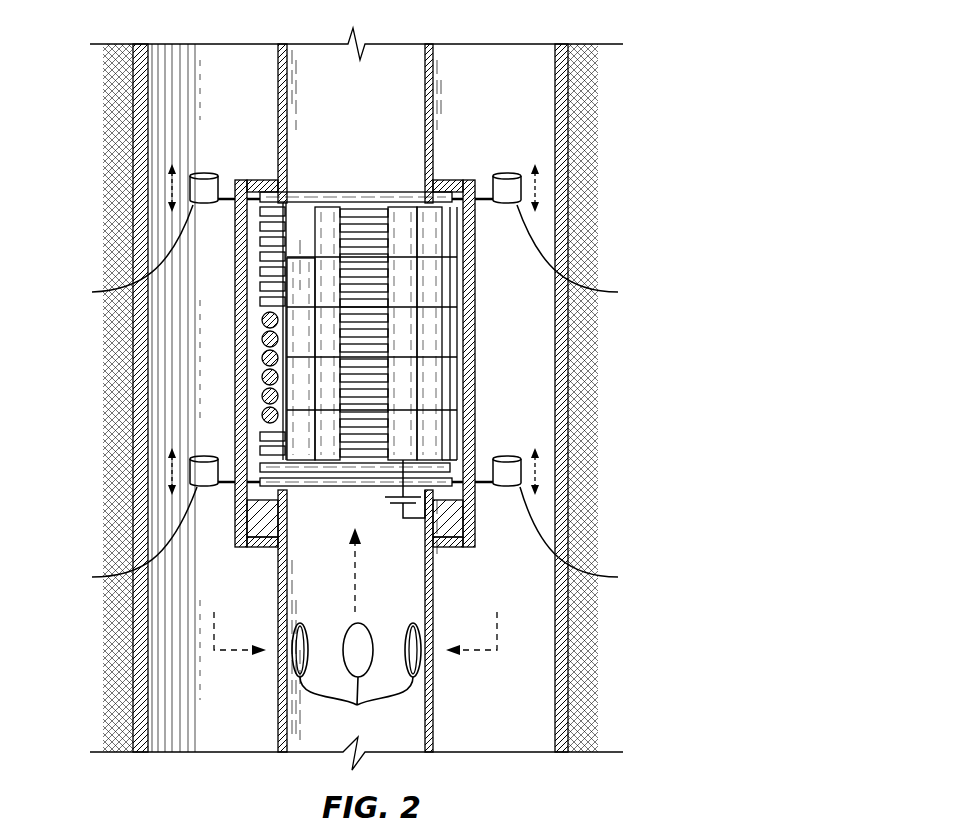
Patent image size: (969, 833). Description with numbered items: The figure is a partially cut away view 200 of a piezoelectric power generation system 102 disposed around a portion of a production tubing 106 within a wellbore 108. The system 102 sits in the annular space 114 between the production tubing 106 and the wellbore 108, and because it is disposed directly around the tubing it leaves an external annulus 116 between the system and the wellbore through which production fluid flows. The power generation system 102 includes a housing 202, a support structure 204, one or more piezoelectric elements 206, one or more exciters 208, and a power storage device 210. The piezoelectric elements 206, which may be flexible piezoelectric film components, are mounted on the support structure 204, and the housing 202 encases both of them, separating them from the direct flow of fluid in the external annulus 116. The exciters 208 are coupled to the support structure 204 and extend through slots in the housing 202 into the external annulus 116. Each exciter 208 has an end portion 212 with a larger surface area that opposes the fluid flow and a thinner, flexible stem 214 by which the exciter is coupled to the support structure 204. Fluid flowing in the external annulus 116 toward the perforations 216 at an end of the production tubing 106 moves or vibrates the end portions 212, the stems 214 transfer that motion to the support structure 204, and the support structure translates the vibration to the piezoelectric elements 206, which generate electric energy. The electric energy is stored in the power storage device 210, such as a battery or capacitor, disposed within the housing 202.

The power generation system 102 is at (476, 285).
The production tubing 106 is at (425, 62).
The wellbore 108 is at (567, 165).
The annular space 114 is at (192, 95).
The external annulus 116 is at (170, 367).
The partially cut away view 200 is at (704, 52).
The housing 202 is at (235, 365).
The support structure 204 is at (370, 192).
The piezoelectric elements 206 is at (430, 342).
The exciters 208 is at (203, 175).
The power storage device 210 is at (263, 530).
The end portion 212 is at (363, 398).
The stem 214 is at (215, 203).
The perforations 216 is at (355, 634).